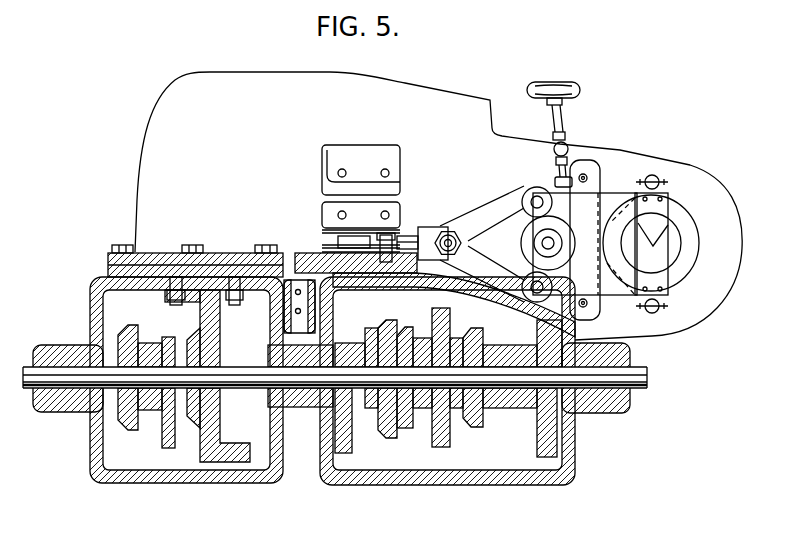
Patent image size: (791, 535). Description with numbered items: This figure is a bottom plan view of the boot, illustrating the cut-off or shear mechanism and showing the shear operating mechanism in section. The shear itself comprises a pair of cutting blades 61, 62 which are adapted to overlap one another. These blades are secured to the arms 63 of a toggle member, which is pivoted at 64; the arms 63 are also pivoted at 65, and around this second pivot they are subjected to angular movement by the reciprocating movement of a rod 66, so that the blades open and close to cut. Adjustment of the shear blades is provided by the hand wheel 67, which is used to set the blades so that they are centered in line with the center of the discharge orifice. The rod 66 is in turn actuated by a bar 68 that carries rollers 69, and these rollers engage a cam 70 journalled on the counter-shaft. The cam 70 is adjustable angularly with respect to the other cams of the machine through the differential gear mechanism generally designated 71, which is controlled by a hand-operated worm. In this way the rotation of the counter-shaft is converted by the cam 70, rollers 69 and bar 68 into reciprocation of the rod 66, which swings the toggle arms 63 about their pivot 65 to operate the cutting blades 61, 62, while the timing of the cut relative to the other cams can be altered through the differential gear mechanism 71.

The cutting blade 61 is at (657, 233).
The cutting blade 62 is at (665, 250).
The arms of toggle member 63 is at (660, 190).
The pivot 64 is at (536, 196).
The pivot 65 is at (540, 243).
The rod 66 is at (430, 232).
The hand wheel 67 is at (582, 84).
The bar 68 is at (288, 263).
The rollers 69 is at (240, 297).
The cam 70 is at (197, 432).
The differential gear mechanism 71 is at (160, 415).